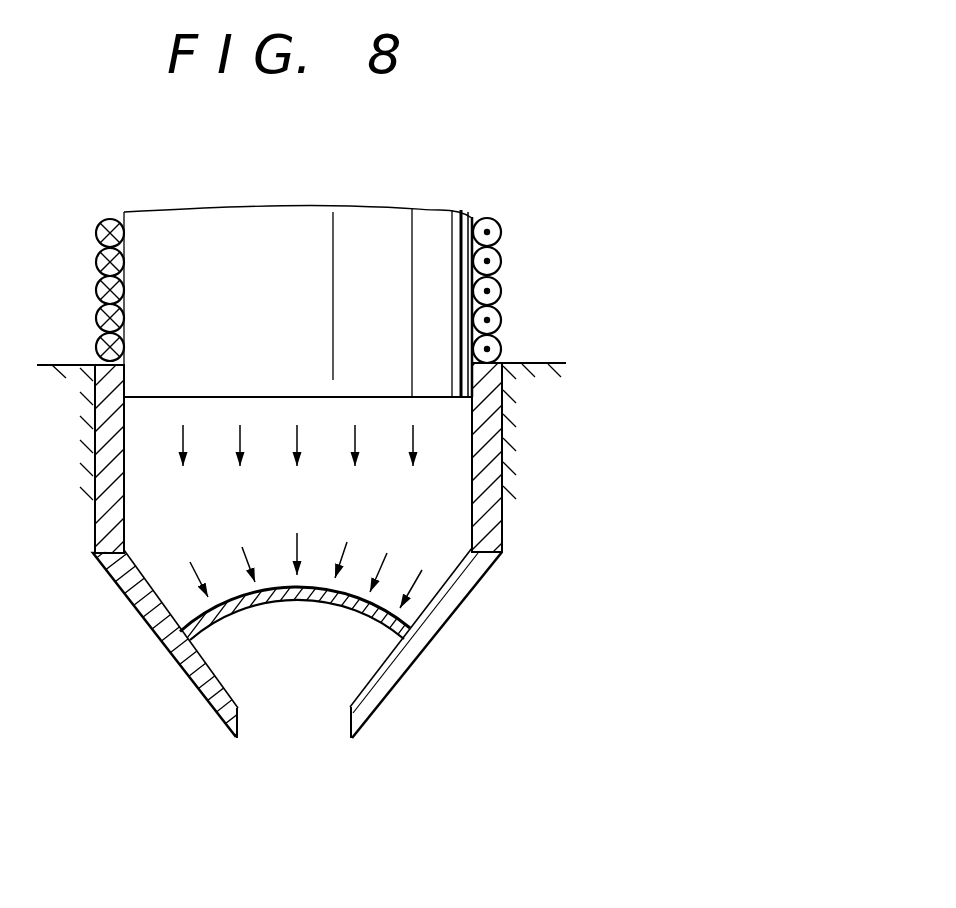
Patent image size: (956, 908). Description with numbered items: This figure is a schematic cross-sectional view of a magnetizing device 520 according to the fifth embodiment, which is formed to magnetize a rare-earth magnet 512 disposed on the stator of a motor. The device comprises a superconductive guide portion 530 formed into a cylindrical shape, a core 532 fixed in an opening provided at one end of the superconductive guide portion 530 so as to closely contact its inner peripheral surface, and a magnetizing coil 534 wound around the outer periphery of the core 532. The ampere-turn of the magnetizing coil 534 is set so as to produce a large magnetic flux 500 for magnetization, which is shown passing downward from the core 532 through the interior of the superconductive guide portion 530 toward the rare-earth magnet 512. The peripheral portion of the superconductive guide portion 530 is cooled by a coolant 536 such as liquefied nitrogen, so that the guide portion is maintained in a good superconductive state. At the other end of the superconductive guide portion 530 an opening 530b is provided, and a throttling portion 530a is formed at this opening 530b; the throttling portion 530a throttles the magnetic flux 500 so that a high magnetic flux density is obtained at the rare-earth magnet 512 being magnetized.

The magnetic flux 500 is at (415, 432).
The rare-earth magnet 512 is at (430, 632).
The magnetizing device 520 is at (380, 535).
The superconductive guide portion 530 is at (502, 425).
The throttling portion 530a is at (402, 657).
The opening 530b is at (305, 720).
The core 532 is at (400, 325).
The magnetizing coil 534 is at (498, 232).
The coolant 536 is at (530, 364).